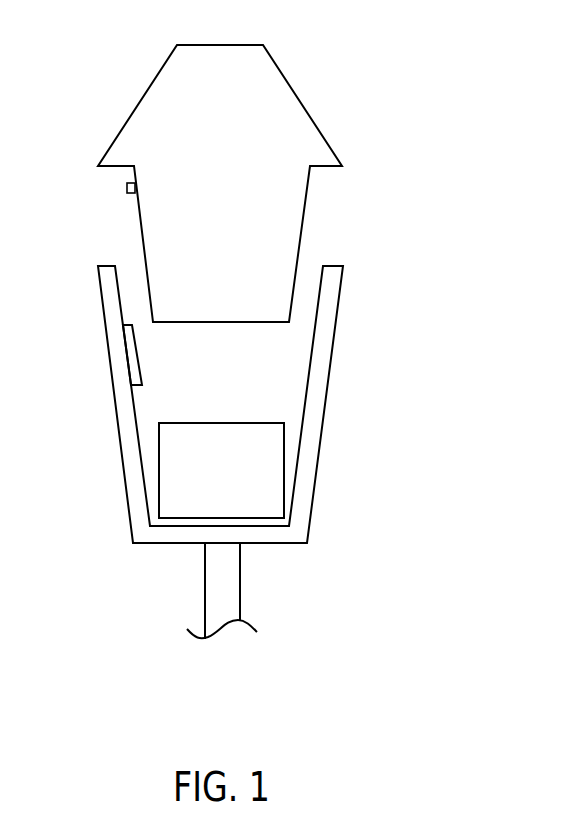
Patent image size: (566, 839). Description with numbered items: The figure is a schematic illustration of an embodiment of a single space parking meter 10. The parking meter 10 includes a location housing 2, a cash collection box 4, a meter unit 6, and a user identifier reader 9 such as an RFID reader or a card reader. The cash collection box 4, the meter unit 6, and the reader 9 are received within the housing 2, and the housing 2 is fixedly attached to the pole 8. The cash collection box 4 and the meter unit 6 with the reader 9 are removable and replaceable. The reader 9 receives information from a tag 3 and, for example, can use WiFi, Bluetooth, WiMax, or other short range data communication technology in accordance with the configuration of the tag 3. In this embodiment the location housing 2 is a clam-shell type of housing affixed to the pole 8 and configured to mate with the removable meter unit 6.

The single space parking meter 10 is at (462, 145).
The meter unit 6 is at (283, 73).
The user identifier reader 9 is at (127, 186).
The location housing 2 is at (334, 332).
The tag 3 is at (132, 350).
The cash collection box 4 is at (285, 469).
The pole 8 is at (240, 592).